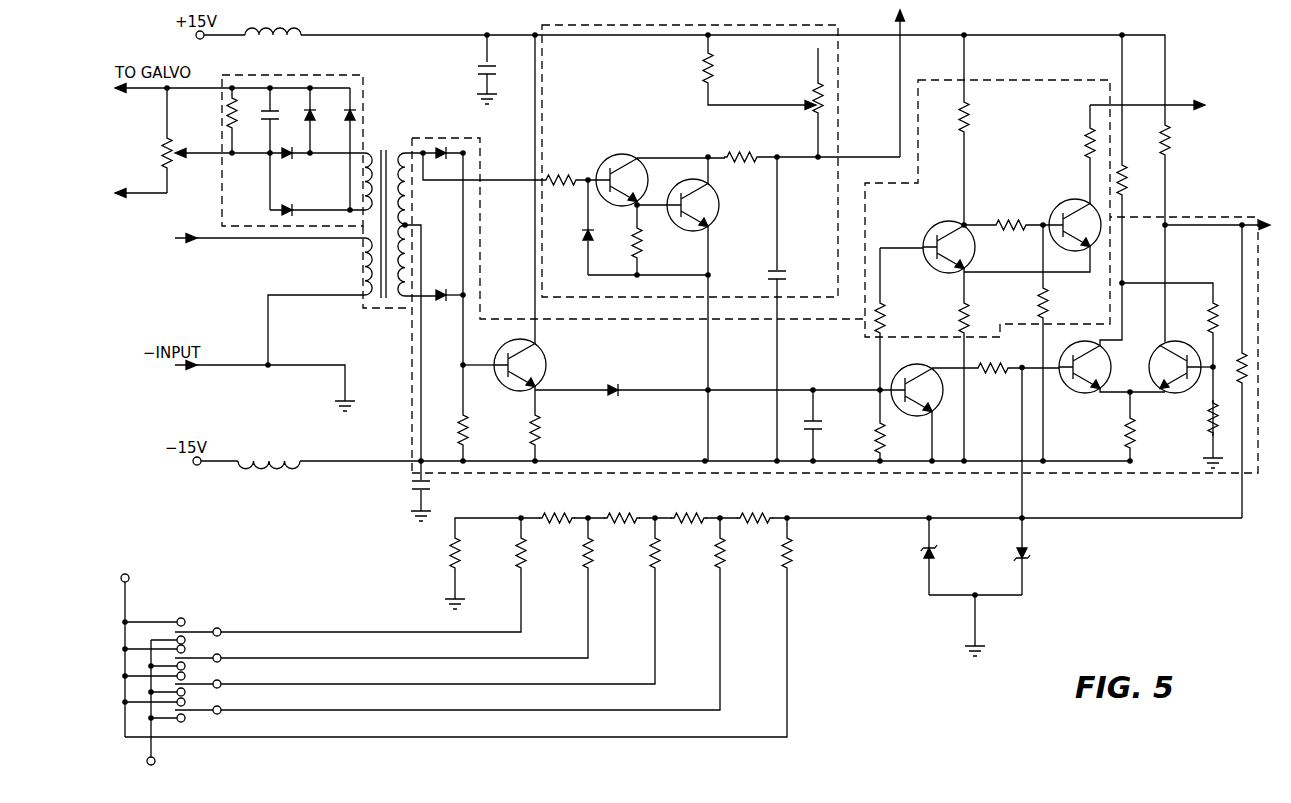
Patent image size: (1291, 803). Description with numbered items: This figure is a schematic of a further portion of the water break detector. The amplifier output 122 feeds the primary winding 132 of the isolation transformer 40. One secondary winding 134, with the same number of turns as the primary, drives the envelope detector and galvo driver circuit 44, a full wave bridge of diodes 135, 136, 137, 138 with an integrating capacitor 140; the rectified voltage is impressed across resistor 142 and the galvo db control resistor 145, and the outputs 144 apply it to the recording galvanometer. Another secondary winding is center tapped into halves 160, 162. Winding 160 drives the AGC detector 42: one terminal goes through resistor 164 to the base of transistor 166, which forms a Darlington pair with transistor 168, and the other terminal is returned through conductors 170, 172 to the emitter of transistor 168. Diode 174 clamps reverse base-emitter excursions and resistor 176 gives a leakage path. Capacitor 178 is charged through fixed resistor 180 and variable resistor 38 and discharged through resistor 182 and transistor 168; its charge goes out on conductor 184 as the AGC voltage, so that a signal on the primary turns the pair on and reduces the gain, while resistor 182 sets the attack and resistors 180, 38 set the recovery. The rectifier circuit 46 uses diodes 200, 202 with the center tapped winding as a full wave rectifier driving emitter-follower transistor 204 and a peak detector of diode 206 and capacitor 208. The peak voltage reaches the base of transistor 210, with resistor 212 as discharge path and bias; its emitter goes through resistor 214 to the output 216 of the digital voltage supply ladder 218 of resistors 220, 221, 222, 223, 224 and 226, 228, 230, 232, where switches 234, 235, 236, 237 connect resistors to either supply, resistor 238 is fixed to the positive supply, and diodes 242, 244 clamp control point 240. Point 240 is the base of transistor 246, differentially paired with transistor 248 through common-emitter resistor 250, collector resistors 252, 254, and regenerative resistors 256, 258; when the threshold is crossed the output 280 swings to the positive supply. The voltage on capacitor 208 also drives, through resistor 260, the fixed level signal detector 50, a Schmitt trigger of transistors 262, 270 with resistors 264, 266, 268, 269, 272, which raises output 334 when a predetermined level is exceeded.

The variable resistor 38 is at (812, 96).
The isolation transformer 40 is at (368, 310).
The AGC detector 42 is at (648, 22).
The envelope detector and galvo driver circuit 44 is at (368, 78).
The rectifier circuit 46 is at (405, 470).
The fixed level signal detector 50 is at (1012, 78).
The output 122 is at (245, 243).
The primary winding 132 is at (360, 265).
The secondary winding 134 is at (375, 150).
The diode 135 is at (289, 160).
The diode 136 is at (312, 122).
The diode 137 is at (345, 116).
The diode 138 is at (290, 207).
The integrating capacitor 140 is at (262, 118).
The resistor 142 is at (227, 120).
The outputs 144 is at (133, 93).
The potentiometer 145 is at (162, 155).
The secondary winding 160 is at (400, 192).
The secondary winding half 162 is at (400, 262).
The resistor 164 is at (578, 168).
The transistor 166 is at (630, 158).
The transistor 168 is at (685, 190).
The conductor 170 is at (413, 396).
The conductor 172 is at (577, 461).
The diode 174 is at (590, 242).
The resistor 176 is at (643, 243).
The capacitor 178 is at (770, 273).
The fixed resistor 180 is at (700, 68).
The resistor 182 is at (745, 163).
The conductor 184 is at (905, 28).
The diode 200 is at (443, 148).
The diode 202 is at (444, 306).
The emitter-follower transistor 204 is at (538, 356).
The diode 206 is at (617, 384).
The capacitor 208 is at (820, 423).
The transistor 210 is at (914, 366).
The resistor 212 is at (886, 440).
The resistor 214 is at (990, 376).
The output 216 is at (860, 518).
The digital voltage supply ladder 218 is at (398, 559).
The resistor 220 is at (462, 558).
The resistor 221 is at (529, 558).
The resistor 222 is at (596, 558).
The resistor 223 is at (662, 558).
The resistor 224 is at (729, 558).
The resistor 226 is at (565, 514).
The resistor 228 is at (630, 514).
The resistor 230 is at (695, 514).
The resistor 232 is at (761, 514).
The manually operated switch 234 is at (203, 630).
The manually operated switch 235 is at (212, 655).
The manually operated switch 236 is at (212, 681).
The manually operated switch 237 is at (212, 708).
The resistor 238 is at (797, 558).
The control point 240 is at (203, 38).
The diode 242 is at (937, 554).
The diode 244 is at (1030, 554).
The transistor 246 is at (1095, 395).
The transistor 248 is at (1165, 395).
The resistor 250 is at (1137, 440).
The resistor 252 is at (1130, 190).
The resistor 254 is at (1170, 133).
The resistor 256 is at (1208, 314).
The resistor 258 is at (1250, 360).
The resistor 260 is at (886, 300).
The transistor 262 is at (946, 224).
The resistor 264 is at (969, 124).
The resistor 266 is at (970, 300).
The resistor 268 is at (1008, 220).
The resistor 269 is at (1049, 308).
The transistor 270 is at (1080, 208).
The resistor 272 is at (1086, 132).
The output 280 is at (1252, 222).
The output 334 is at (1178, 104).